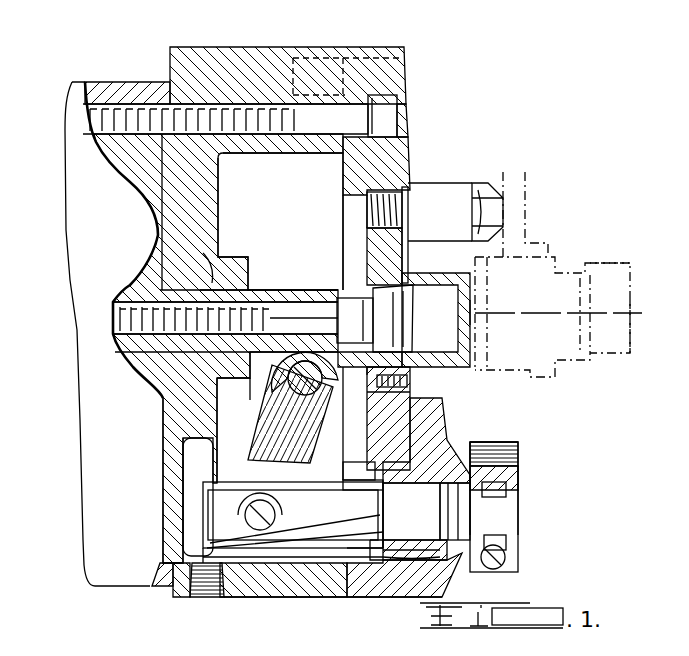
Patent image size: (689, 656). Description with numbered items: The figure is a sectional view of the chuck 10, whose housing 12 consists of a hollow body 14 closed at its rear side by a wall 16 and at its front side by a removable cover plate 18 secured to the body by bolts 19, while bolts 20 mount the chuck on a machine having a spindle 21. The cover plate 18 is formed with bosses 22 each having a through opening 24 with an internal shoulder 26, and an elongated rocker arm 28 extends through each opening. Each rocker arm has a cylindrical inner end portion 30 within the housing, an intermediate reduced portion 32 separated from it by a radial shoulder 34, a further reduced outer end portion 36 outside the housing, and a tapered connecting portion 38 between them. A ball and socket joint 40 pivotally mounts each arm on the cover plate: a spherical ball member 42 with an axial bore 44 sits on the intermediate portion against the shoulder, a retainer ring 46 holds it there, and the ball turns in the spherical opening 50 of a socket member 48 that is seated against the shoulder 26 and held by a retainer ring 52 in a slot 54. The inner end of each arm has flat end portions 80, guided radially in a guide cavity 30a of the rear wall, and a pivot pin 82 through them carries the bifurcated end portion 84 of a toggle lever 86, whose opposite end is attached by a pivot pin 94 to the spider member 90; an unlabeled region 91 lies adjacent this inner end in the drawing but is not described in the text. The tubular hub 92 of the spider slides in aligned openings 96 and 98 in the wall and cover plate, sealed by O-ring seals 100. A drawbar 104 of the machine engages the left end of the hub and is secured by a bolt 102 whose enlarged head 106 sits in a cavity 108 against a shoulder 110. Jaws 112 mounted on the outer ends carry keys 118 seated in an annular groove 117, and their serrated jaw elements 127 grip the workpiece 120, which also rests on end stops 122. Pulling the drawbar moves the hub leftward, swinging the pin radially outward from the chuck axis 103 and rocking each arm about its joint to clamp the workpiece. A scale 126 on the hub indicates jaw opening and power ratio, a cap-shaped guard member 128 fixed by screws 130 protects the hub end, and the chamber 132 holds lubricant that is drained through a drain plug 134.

The chuck 10 is at (207, 608).
The housing 12 is at (410, 46).
The hollow body 14 is at (260, 590).
The wall 16 is at (165, 482).
The cover plate 18 is at (398, 163).
The bolts 19 is at (408, 62).
The bolts 20 is at (385, 110).
The spindle 21 is at (113, 84).
The bosses 22 is at (476, 442).
The through opening 24 is at (410, 553).
The internal shoulder 26 is at (430, 563).
The rocker arm 28 is at (340, 548).
The cylindrical inner end portion 30 is at (208, 420).
The guide cavity 30a is at (200, 470).
The intermediate reduced portion 32 is at (388, 406).
The radial shoulder 34 is at (359, 499).
The outer end portion 36 is at (510, 505).
The tapered connecting portion 38 is at (494, 507).
The ball and socket joint 40 is at (425, 462).
The spherical ball member 42 is at (411, 511).
The axial bore 44 is at (434, 511).
The retainer ring 46 is at (415, 540).
The socket member 48 is at (380, 562).
The spherical opening 50 is at (365, 525).
The retainer ring 52 is at (378, 480).
The slot 54 is at (386, 418).
The flat end portions 80 is at (293, 519).
The pivot pin 82 is at (240, 520).
The bifurcated end portion 84 is at (290, 414).
The toggle lever 86 is at (222, 390).
The spider member 90 is at (280, 290).
The slot 91 is at (258, 385).
The tubular hub 92 is at (252, 288).
The pivot pin 94 is at (245, 368).
The opening 96 is at (228, 288).
The opening 98 is at (375, 333).
The seals 100 is at (191, 255).
The bolt 102 is at (290, 300).
The chuck axis 103 is at (607, 312).
The drawbar 104 is at (128, 343).
The enlarged head 106 is at (336, 318).
The cavity 108 is at (385, 305).
The shoulder 110 is at (292, 300).
The jaws 112 is at (533, 461).
The annular peripheral inner groove 117 is at (512, 442).
The keys or lugs 118 is at (508, 488).
The workpiece 120 is at (548, 255).
The end stops 122 is at (462, 185).
The scale 126 is at (392, 340).
The serrated jaw elements 127 is at (505, 440).
The guard member 128 is at (463, 317).
The screws 130 is at (408, 381).
The chamber 132 is at (300, 176).
The drain plug 134 is at (200, 598).